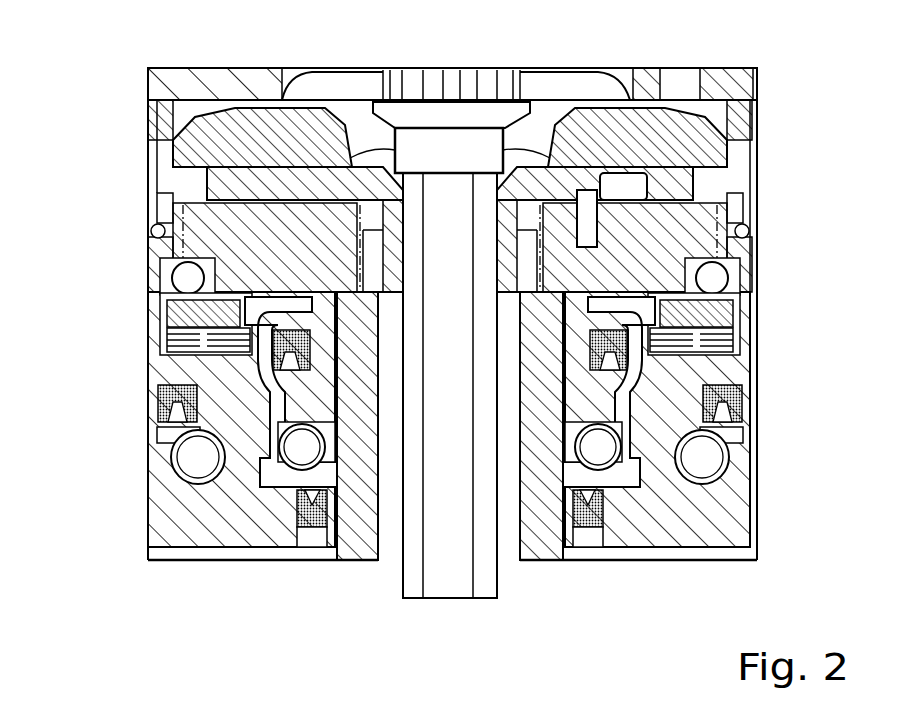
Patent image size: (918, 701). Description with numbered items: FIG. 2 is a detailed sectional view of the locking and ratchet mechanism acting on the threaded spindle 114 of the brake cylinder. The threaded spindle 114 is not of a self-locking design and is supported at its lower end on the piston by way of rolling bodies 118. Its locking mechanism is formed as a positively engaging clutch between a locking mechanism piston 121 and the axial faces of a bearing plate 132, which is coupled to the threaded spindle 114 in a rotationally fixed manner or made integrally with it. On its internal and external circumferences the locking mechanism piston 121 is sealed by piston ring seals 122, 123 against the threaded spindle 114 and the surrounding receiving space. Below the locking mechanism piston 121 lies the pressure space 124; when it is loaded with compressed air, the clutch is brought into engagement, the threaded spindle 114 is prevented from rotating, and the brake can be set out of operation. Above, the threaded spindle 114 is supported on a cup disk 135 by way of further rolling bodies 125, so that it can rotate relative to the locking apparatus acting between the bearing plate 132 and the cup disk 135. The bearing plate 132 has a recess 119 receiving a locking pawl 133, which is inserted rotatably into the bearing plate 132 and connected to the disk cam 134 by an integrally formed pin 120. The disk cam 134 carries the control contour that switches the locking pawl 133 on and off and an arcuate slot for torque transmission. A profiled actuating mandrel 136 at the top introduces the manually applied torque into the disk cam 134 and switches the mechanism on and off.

The threaded spindle 114 is at (722, 438).
The rolling bodies 118 is at (603, 460).
The recess 119 is at (625, 259).
The pin 120 is at (630, 188).
The locking mechanism piston 121 is at (738, 365).
The piston ring seal 122 is at (623, 335).
The piston ring seal 123 is at (158, 407).
The pressure space 124 is at (275, 392).
The rolling bodies 125 is at (712, 280).
The bearing plate 132 is at (720, 313).
The locking pawl 133 is at (692, 218).
The disk cam 134 is at (580, 172).
The cup disk 135 is at (697, 123).
The actuating mandrel 136 is at (448, 128).